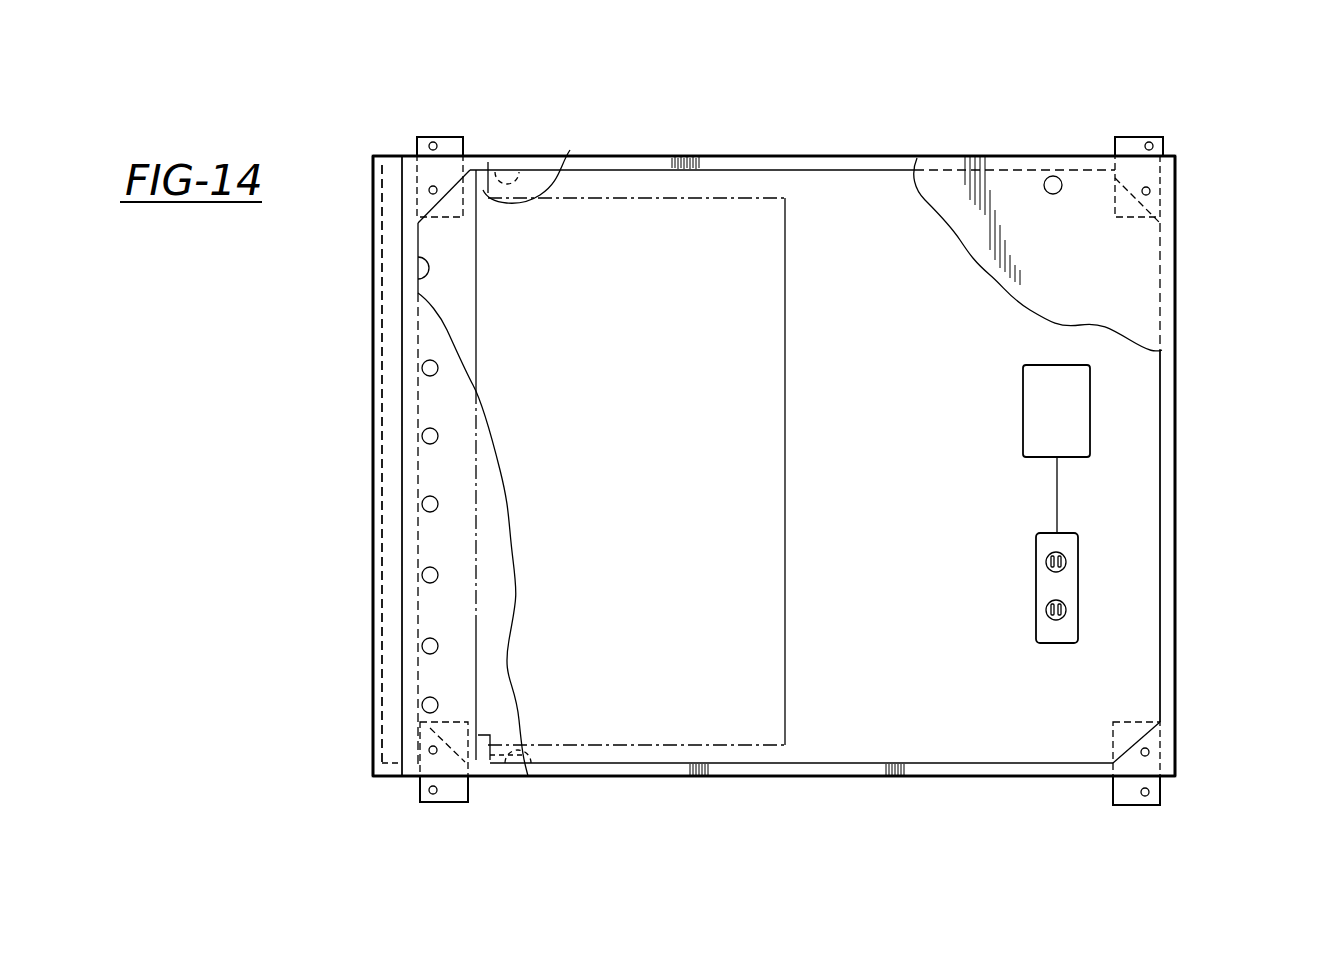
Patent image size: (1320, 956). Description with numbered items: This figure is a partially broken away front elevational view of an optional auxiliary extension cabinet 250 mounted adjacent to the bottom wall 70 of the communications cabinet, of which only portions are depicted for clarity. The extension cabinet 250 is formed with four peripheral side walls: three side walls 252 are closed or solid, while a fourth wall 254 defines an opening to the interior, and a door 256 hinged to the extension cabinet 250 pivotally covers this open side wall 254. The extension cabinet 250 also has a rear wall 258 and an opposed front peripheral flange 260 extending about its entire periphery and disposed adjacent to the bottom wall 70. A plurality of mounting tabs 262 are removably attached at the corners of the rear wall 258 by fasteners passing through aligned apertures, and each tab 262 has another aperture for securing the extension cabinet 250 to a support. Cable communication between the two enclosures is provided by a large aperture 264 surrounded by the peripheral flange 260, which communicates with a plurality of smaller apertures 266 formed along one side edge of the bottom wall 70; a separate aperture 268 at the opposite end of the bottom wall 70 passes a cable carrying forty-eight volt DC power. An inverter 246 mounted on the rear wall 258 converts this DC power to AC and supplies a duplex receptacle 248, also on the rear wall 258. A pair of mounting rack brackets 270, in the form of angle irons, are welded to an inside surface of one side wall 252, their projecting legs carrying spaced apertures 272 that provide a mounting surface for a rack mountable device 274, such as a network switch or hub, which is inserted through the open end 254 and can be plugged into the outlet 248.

The bottom wall 70 is at (425, 458).
The inverter 246 is at (1082, 413).
The duplex receptacle 248 is at (1068, 585).
The extension cabinet 250 is at (656, 154).
The side walls 252 is at (853, 157).
The fourth wall 254 is at (378, 632).
The door 256 is at (372, 563).
The rear wall 258 is at (903, 202).
The front peripheral flange 260 is at (1170, 415).
The mounting tabs 262 is at (420, 137).
The large aperture 264 is at (420, 283).
The smaller apertures 266 is at (422, 368).
The separate aperture 268 is at (1052, 176).
The mounting rack brackets 270 is at (527, 160).
The spaced apertures 272 is at (570, 150).
The rack mountable device 274 is at (738, 195).